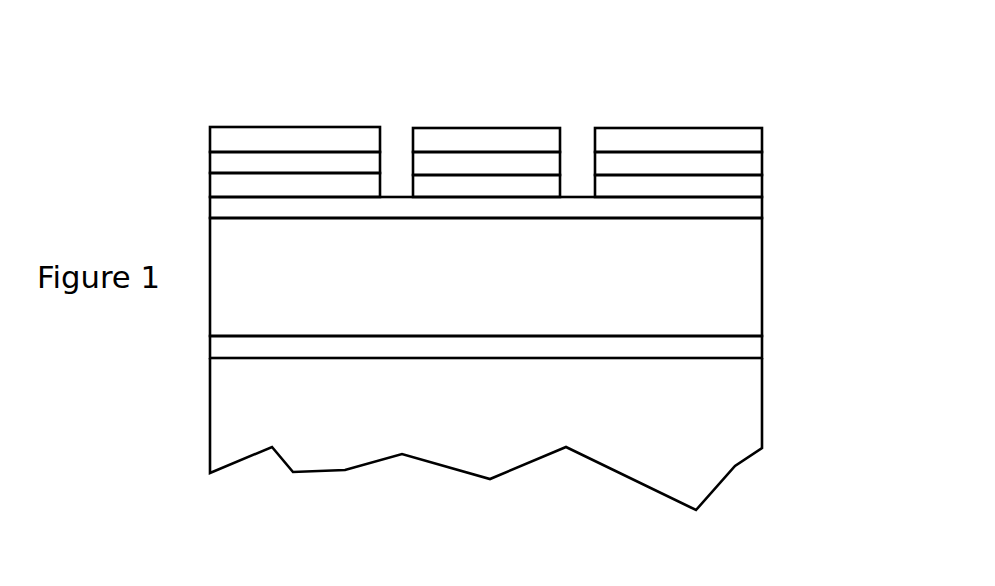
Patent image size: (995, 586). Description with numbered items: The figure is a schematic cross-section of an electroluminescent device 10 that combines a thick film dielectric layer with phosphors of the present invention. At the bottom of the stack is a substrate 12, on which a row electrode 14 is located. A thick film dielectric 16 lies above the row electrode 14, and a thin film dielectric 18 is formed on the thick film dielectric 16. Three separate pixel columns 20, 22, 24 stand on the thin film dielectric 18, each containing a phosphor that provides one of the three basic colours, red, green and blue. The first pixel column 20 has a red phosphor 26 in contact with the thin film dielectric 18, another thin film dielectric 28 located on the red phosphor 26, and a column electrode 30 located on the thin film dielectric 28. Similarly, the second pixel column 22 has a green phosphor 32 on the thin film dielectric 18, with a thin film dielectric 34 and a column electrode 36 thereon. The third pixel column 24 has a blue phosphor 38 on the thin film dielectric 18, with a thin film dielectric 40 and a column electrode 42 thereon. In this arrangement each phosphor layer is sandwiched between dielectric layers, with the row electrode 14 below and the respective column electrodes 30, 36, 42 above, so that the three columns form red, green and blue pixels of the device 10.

The electroluminescent device 10 is at (718, 72).
The substrate 12 is at (748, 412).
The row electrode 14 is at (748, 350).
The thick film dielectric 16 is at (748, 277).
The thin film dielectric 18 is at (750, 210).
The pixel column 20 is at (295, 104).
The pixel column 22 is at (485, 104).
The pixel column 24 is at (636, 104).
The red phosphor 26 is at (218, 190).
The thin film dielectric 28 is at (218, 163).
The column electrode 30 is at (218, 140).
The green phosphor 32 is at (441, 188).
The thin film dielectric 34 is at (523, 162).
The column electrode 36 is at (435, 142).
The blue phosphor 38 is at (640, 190).
The thin film dielectric 40 is at (753, 166).
The column electrode 42 is at (753, 142).